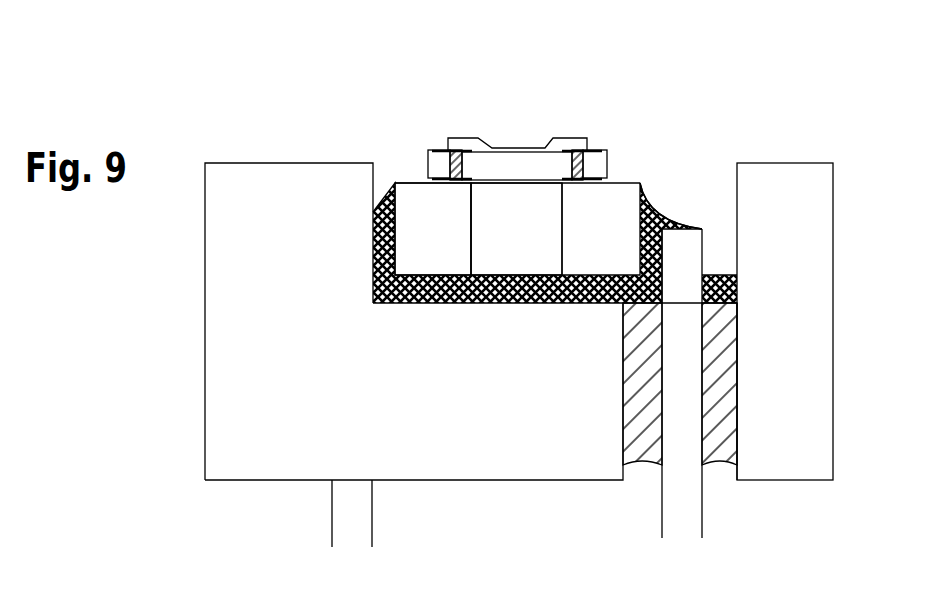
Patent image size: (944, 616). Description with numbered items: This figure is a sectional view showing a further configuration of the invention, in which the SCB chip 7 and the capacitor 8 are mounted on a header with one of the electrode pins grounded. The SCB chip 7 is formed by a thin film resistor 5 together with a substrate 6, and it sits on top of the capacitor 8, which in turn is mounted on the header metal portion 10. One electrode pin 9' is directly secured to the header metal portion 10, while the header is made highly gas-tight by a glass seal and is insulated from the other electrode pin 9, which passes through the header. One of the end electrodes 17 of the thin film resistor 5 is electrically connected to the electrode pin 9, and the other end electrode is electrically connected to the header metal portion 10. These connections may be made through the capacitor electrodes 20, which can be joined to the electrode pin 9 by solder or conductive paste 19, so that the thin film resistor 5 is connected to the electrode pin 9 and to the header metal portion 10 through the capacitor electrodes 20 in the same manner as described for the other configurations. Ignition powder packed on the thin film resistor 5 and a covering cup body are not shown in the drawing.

The thin film resistor 5 is at (517, 150).
The substrate 6 is at (557, 168).
The SCB chip 7 is at (526, 100).
The capacitor 8 is at (545, 232).
The electrode pin 9 is at (728, 404).
The electrode pin 9' is at (384, 534).
The header metal portion 10 is at (287, 428).
The end electrodes 17 is at (467, 150).
The solder or conductive paste 19 is at (658, 190).
The capacitor electrodes 20 is at (422, 220).